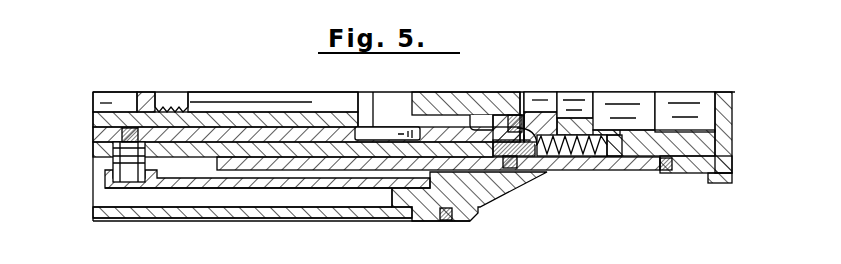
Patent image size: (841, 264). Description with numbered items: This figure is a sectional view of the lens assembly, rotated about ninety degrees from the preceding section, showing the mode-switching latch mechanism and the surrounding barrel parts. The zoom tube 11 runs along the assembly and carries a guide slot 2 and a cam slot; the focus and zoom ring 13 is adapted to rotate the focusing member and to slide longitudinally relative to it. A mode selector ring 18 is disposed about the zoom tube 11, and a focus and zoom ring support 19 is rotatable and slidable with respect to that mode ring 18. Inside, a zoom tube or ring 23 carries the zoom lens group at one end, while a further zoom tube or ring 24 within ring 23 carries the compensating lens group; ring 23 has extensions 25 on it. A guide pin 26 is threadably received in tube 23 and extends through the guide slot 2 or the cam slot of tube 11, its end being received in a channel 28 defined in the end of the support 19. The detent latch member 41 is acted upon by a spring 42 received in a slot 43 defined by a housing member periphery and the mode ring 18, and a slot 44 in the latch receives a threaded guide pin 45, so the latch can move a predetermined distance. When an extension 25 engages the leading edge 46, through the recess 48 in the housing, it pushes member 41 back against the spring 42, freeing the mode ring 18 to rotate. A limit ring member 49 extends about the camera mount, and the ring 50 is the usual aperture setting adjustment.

The clamping screw 2 is at (113, 152).
The zoom tube 11 is at (207, 157).
The focus and zoom ring 13 is at (262, 212).
The mode selector ring 18 is at (612, 172).
The focus and zoom ring support 19 is at (312, 190).
The zoom tube 23 is at (160, 128).
The zoom tube 24 is at (262, 112).
The extension 25 is at (372, 134).
The guide pin 26 is at (130, 182).
The channel 28 is at (110, 180).
The detent latch member 41 is at (532, 145).
The spring 42 is at (587, 143).
The slot 43 is at (593, 160).
The slot 44 is at (497, 138).
The threaded guide pin 45 is at (528, 132).
The leading edge 46 is at (472, 138).
The recess 48 is at (458, 113).
The limit ring member 49 is at (688, 174).
The ring 50 is at (716, 181).